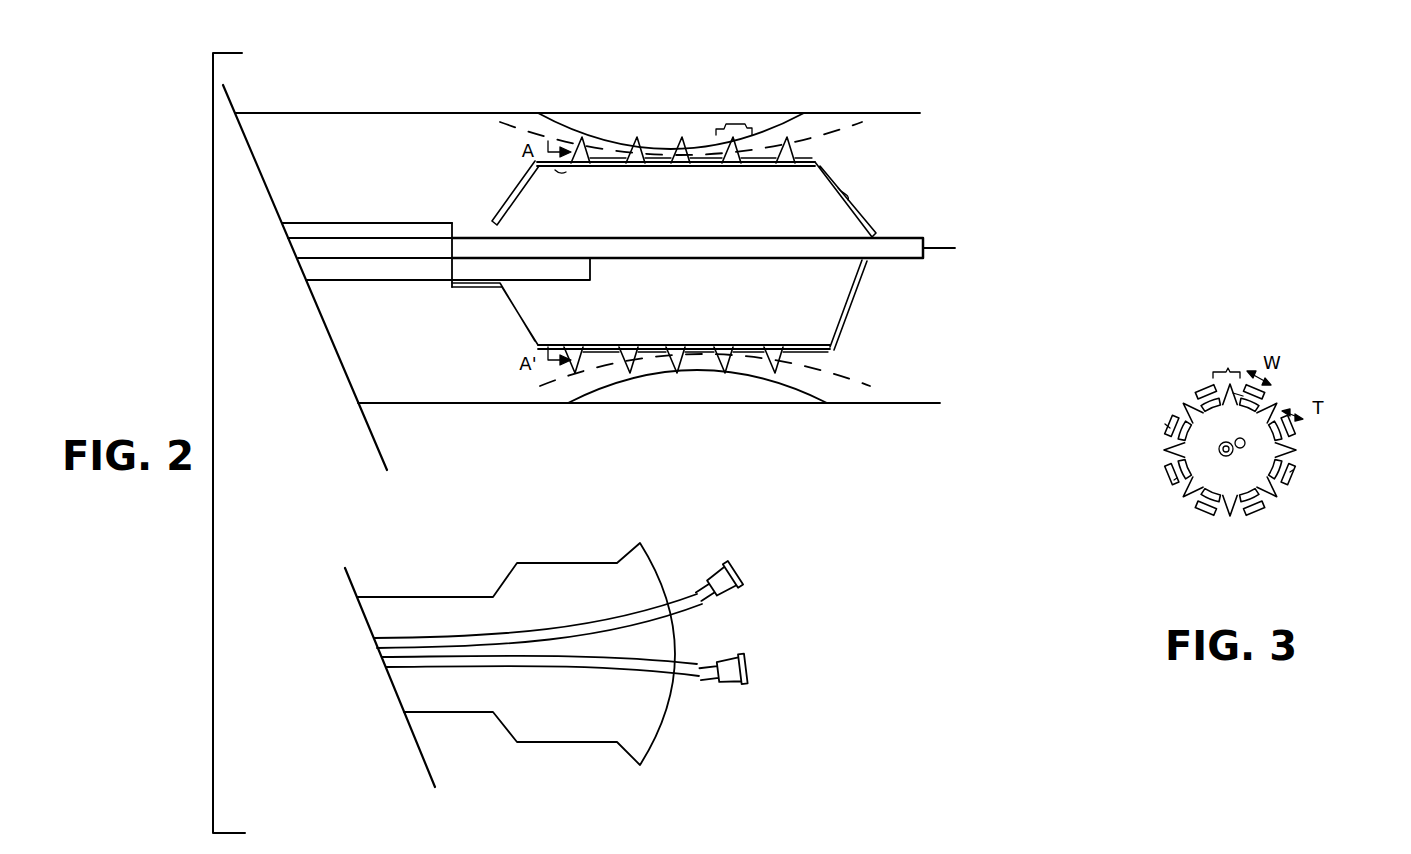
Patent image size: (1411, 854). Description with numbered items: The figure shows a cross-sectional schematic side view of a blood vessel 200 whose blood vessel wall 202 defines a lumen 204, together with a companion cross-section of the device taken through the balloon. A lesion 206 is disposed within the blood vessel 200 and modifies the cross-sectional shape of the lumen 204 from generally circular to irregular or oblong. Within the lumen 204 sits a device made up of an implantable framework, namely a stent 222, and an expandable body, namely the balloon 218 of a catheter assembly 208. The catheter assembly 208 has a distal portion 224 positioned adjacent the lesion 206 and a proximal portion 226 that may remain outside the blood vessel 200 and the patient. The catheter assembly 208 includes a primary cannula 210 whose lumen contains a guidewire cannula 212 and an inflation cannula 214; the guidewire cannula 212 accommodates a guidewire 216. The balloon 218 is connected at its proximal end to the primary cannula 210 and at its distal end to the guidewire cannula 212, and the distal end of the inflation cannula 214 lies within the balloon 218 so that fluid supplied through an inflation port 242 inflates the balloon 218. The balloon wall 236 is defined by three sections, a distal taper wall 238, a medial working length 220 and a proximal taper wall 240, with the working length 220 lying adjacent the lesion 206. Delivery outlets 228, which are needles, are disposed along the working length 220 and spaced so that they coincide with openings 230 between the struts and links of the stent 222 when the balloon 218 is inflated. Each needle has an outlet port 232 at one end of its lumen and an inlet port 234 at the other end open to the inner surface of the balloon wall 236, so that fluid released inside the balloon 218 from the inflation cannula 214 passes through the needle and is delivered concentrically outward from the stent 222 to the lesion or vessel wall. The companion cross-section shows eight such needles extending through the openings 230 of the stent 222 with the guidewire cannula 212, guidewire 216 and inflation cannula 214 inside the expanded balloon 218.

In FIG. 2, the blood vessel 200 is at (851, 73).
In FIG. 2, the blood vessel wall 202 is at (897, 112).
In FIG. 2, the lumen 204 is at (970, 172).
In FIG. 2, the lesion 206 is at (683, 130).
In FIG. 2, the catheter assembly 208 is at (485, 140).
In FIG. 3, the catheter assembly 208 is at (1190, 365).
In FIG. 2, the primary cannula 210 is at (375, 290).
In FIG. 2, the guidewire cannula 212 is at (320, 250).
In FIG. 3, the guidewire cannula 212 is at (1165, 424).
In FIG. 2, the inflation cannula 214 is at (378, 272).
In FIG. 3, the inflation cannula 214 is at (1246, 444).
In FIG. 2, the guidewire 216 is at (947, 250).
In FIG. 3, the guidewire 216 is at (1222, 455).
In FIG. 2, the balloon 218 is at (850, 222).
In FIG. 3, the balloon 218 is at (1290, 471).
In FIG. 2, the medial working length 220 is at (810, 175).
In FIG. 2, the stent 222 is at (797, 130).
In FIG. 3, the stent 222 is at (1194, 388).
In FIG. 2, the distal portion 224 is at (838, 430).
In FIG. 2, the proximal portion 226 is at (440, 797).
In FIG. 2, the delivery outlets 228 is at (782, 148).
In FIG. 3, the delivery outlets 228 is at (1233, 393).
In FIG. 2, the openings 230 is at (733, 125).
In FIG. 3, the openings 230 is at (1223, 360).
In FIG. 2, the outlet port 232 is at (783, 140).
In FIG. 2, the inlet port 234 is at (760, 163).
In FIG. 2, the balloon wall 236 is at (852, 300).
In FIG. 3, the balloon wall 236 is at (1174, 480).
In FIG. 2, the distal taper wall 238 is at (846, 195).
In FIG. 2, the proximal taper wall 240 is at (493, 210).
In FIG. 2, the inflation port 242 is at (742, 672).